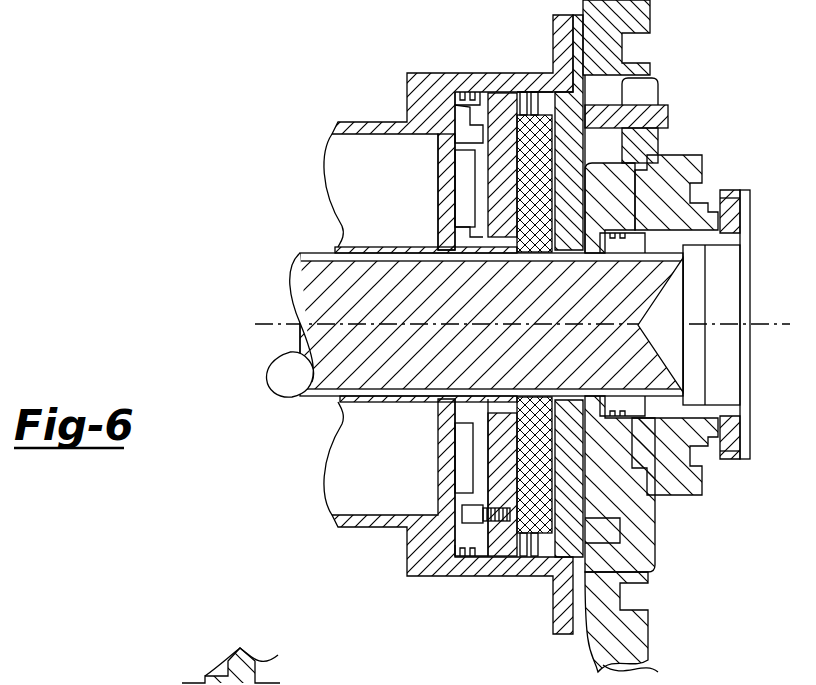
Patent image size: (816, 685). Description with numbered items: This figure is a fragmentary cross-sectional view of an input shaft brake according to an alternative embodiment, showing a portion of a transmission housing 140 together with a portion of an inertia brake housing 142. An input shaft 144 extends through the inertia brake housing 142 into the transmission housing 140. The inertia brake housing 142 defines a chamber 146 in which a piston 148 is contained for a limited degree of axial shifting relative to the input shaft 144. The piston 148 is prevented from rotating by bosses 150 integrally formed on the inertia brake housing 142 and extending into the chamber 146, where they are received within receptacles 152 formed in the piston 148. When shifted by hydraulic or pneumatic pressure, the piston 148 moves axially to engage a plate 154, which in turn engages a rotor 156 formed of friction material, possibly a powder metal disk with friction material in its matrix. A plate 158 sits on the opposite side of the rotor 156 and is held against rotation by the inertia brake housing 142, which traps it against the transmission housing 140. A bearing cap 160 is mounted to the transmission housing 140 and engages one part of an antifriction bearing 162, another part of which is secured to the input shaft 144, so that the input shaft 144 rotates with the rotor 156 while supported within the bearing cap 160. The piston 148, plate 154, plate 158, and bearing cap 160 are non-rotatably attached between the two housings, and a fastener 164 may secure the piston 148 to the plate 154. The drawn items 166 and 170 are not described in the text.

The transmission housing 140 is at (645, 640).
The inertia brake housing 142 is at (475, 78).
The input shaft 144 is at (305, 300).
The chamber 146 is at (462, 455).
The piston 148 is at (480, 205).
The bosses 150 is at (470, 125).
The receptacles 152 is at (468, 133).
The plate 154 is at (502, 92).
The rotor 156 is at (536, 528).
The plate 158 is at (605, 110).
The bearing cap 160 is at (645, 545).
The antifriction bearing 162 is at (690, 492).
The fastener 164 is at (470, 516).
The pin 166 is at (532, 94).
The bracket 170 is at (264, 666).